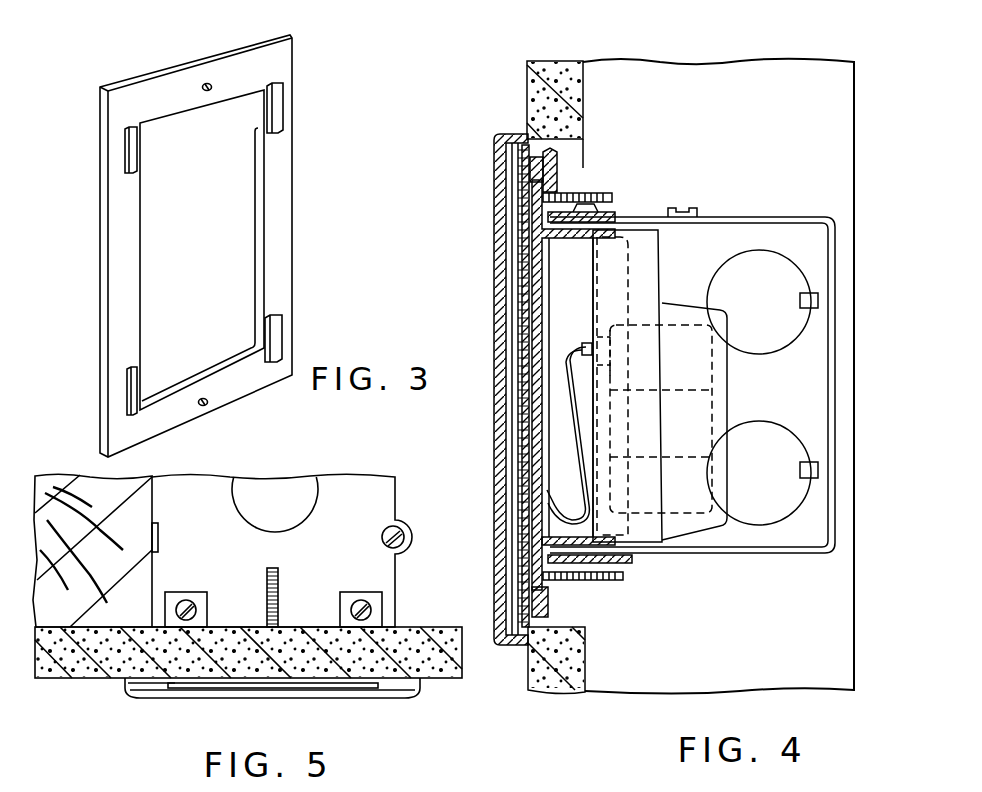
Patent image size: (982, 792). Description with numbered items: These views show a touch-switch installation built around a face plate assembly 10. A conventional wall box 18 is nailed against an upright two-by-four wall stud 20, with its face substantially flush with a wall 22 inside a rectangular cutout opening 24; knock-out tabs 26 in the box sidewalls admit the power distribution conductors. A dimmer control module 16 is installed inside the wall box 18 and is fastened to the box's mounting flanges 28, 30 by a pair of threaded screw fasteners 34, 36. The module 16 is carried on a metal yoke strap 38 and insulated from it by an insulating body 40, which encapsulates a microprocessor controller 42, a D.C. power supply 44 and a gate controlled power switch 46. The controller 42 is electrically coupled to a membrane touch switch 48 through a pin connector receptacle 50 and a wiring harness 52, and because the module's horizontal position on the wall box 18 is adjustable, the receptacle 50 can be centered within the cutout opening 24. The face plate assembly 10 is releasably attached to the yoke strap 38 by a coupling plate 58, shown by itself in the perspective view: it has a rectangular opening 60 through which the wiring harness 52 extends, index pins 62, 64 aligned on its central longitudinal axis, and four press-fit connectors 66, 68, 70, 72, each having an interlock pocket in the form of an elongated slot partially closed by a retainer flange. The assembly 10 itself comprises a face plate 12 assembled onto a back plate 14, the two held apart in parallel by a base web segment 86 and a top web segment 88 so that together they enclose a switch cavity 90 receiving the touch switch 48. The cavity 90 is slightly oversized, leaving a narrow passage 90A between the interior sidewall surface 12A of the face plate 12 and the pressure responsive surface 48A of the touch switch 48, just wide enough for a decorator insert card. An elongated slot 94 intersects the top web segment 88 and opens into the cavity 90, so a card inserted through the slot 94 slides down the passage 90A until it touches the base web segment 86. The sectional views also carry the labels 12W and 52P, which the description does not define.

In FIG. 4, the face plate assembly 10 is at (467, 138).
In FIG. 5, the face plate 12 is at (412, 695).
In FIG. 4, the face plate 12 is at (492, 206).
In FIG. 4, the interior sidewall surface 12A is at (502, 228).
In FIG. 4, the cover plate wall 12W is at (499, 347).
In FIG. 4, the back plate 14 is at (538, 351).
In FIG. 4, the dimmer control module 16 is at (732, 396).
In FIG. 5, the wall box 18 is at (356, 478).
In FIG. 4, the wall box 18 is at (779, 214).
In FIG. 5, the wall stud 20 is at (72, 478).
In FIG. 4, the wall stud 20 is at (758, 62).
In FIG. 5, the wall 22 is at (446, 630).
In FIG. 4, the wall 22 is at (556, 62).
In FIG. 4, the rectangular cutout opening 24 is at (584, 148).
In FIG. 4, the knock-out tabs 26 is at (780, 276).
In FIG. 4, the mounting flange 28 is at (560, 588).
In FIG. 4, the mounting flange 30 is at (563, 181).
In FIG. 4, the threaded screw fastener 34 is at (572, 566).
In FIG. 5, the threaded screw fastener 36 is at (279, 572).
In FIG. 4, the threaded screw fastener 36 is at (616, 196).
In FIG. 4, the yoke strap 38 is at (552, 245).
In FIG. 4, the insulating body 40 is at (648, 250).
In FIG. 4, the microprocessor controller 42 is at (670, 361).
In FIG. 4, the D.C. power supply 44 is at (670, 428).
In FIG. 4, the gate controlled power switch 46 is at (670, 493).
In FIG. 4, the membrane touch switch 48 is at (519, 314).
In FIG. 4, the pressure responsive surface 48A is at (531, 325).
In FIG. 4, the pin connector receptacle 50 is at (594, 353).
In FIG. 4, the wiring harness 52 is at (580, 430).
In FIG. 4, the spring pivot 52P is at (590, 364).
In FIG. 3, the coupling plate 58 is at (302, 52).
In FIG. 4, the coupling plate 58 is at (553, 299).
In FIG. 3, the rectangular opening 60 is at (184, 249).
In FIG. 3, the index pin 62 is at (204, 404).
In FIG. 4, the index pin 62 is at (548, 615).
In FIG. 3, the index pin 64 is at (204, 86).
In FIG. 4, the index pin 64 is at (545, 168).
In FIG. 3, the press-fit connector 66 is at (282, 330).
In FIG. 3, the press-fit connector 68 is at (128, 388).
In FIG. 3, the press-fit connector 70 is at (128, 150).
In FIG. 3, the press-fit connector 72 is at (283, 116).
In FIG. 4, the base web segment 86 is at (515, 650).
In FIG. 5, the top web segment 88 is at (140, 690).
In FIG. 4, the top web segment 88 is at (517, 134).
In FIG. 4, the switch cavity 90 is at (492, 163).
In FIG. 4, the narrow passage 90A is at (516, 281).
In FIG. 5, the elongated slot 94 is at (344, 690).
In FIG. 4, the elongated slot 94 is at (510, 132).